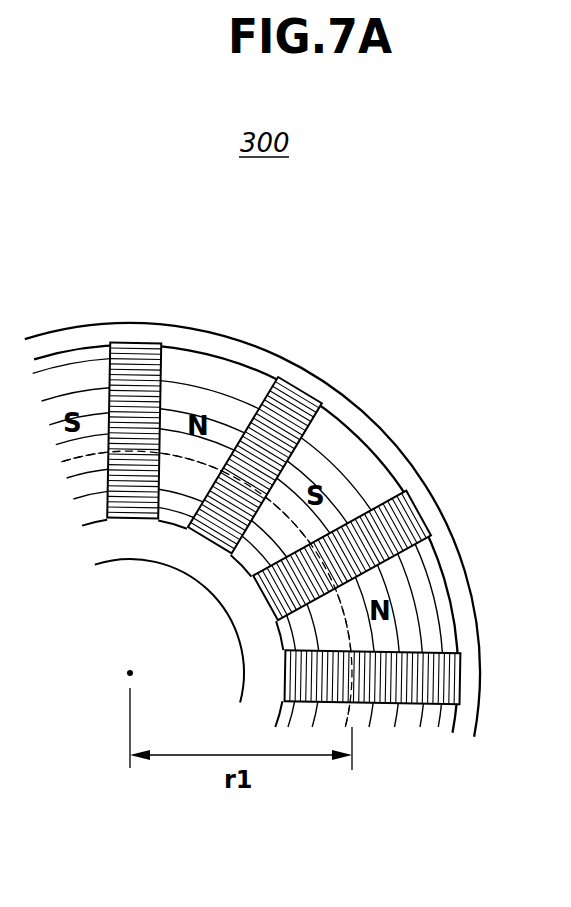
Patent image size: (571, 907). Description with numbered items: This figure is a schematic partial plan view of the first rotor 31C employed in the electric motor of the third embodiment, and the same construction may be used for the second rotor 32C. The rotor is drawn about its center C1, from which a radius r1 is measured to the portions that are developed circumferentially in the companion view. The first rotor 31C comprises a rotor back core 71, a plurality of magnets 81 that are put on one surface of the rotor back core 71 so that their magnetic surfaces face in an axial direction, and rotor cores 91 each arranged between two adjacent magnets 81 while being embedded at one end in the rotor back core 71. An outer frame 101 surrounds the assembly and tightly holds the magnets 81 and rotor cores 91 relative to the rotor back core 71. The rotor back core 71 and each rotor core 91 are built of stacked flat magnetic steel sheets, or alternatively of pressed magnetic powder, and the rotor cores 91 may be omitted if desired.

The magnets 81 is at (65, 375).
The rotor cores 91 is at (133, 360).
The first rotor 31C is at (268, 509).
The second rotor 32C is at (182, 623).
The outer frame 101 is at (352, 410).
The rotor back core 71 is at (262, 642).
The center C1 is at (128, 672).